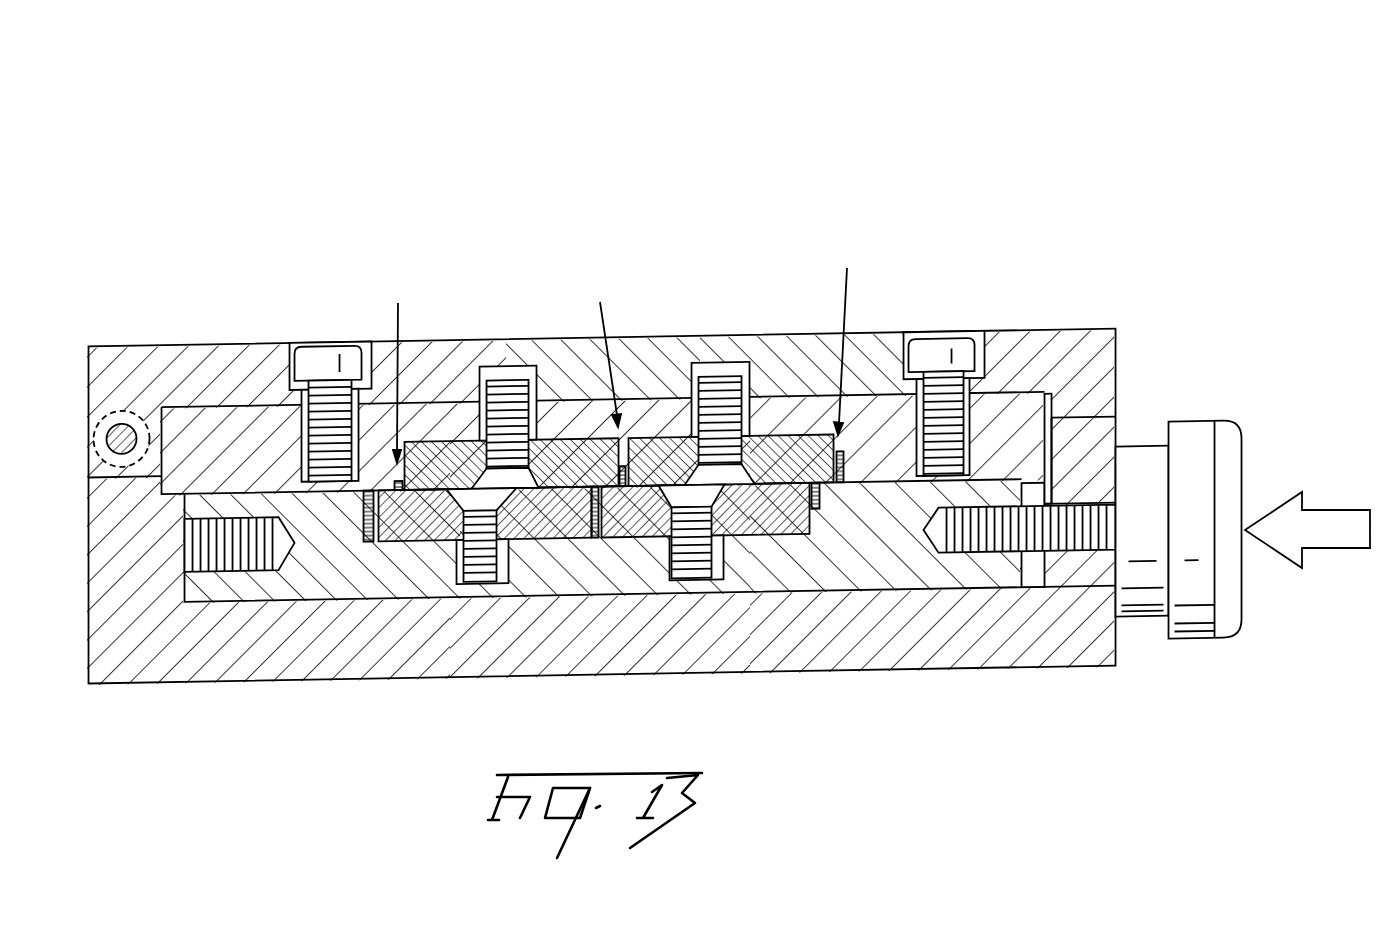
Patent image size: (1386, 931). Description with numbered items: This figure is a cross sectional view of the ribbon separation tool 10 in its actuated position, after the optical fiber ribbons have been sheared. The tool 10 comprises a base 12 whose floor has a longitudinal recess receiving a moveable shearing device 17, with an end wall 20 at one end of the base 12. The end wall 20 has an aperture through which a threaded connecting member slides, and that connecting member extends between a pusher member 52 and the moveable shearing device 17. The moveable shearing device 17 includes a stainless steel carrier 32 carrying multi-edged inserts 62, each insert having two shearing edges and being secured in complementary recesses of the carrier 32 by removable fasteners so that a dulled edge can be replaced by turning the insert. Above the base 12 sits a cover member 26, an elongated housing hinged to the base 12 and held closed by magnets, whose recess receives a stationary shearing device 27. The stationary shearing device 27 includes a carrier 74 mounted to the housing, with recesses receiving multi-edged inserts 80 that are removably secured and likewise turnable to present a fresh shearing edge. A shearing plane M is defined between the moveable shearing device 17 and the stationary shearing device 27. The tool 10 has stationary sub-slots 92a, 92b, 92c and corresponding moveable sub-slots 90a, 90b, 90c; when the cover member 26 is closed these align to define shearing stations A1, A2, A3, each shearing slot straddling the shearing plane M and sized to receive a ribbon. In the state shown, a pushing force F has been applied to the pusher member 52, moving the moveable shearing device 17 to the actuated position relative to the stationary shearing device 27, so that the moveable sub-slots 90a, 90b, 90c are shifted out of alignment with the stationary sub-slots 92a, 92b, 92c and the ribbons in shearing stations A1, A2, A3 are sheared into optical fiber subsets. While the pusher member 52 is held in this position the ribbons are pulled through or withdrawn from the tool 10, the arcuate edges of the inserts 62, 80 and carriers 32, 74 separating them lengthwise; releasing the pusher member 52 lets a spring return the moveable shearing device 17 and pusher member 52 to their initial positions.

The ribbon separation tool 10 is at (728, 443).
The base 12 is at (352, 681).
The moveable shearing device 17 is at (763, 540).
The end wall 20 is at (1118, 655).
The cover member 26 is at (788, 328).
The stationary shearing device 27 is at (803, 433).
The carrier 32 is at (915, 573).
The pusher member 52 is at (1225, 613).
The multi-edged inserts 62 is at (538, 547).
The carrier 74 is at (1015, 407).
The multi-edged inserts 80 is at (553, 445).
The moveable sub-slot 90a is at (822, 508).
The moveable sub-slot 90b is at (570, 547).
The moveable sub-slot 90c is at (343, 523).
The stationary sub-slot 92a is at (870, 433).
The stationary sub-slot 92b is at (650, 437).
The stationary sub-slot 92c is at (392, 478).
The shearing station A1 is at (846, 335).
The shearing station A2 is at (604, 347).
The shearing station A3 is at (406, 365).
The shearing plane M is at (1057, 413).
The pushing force F is at (1337, 508).